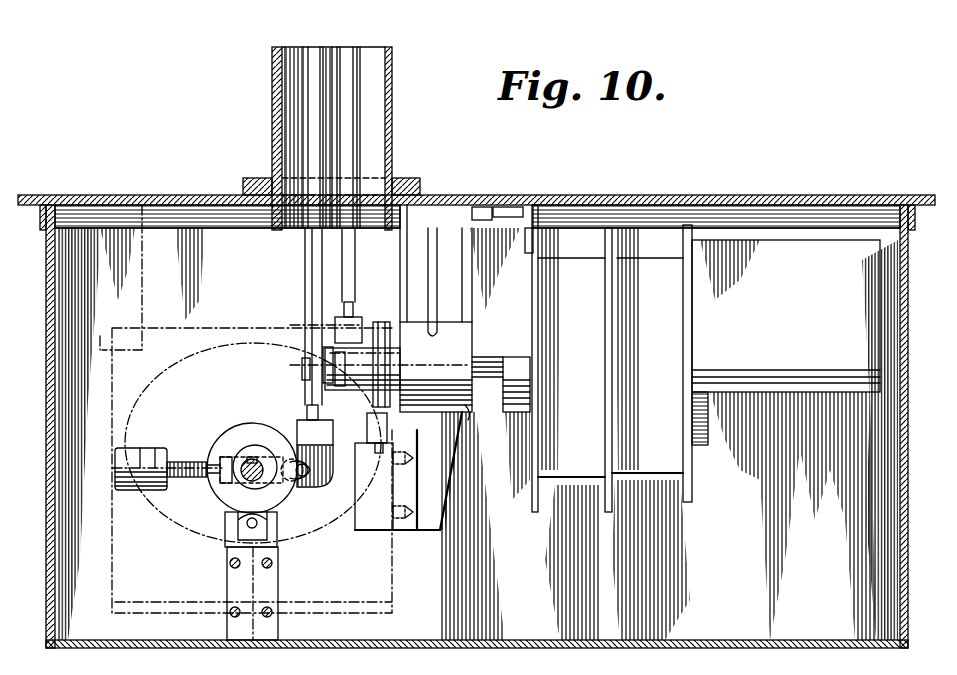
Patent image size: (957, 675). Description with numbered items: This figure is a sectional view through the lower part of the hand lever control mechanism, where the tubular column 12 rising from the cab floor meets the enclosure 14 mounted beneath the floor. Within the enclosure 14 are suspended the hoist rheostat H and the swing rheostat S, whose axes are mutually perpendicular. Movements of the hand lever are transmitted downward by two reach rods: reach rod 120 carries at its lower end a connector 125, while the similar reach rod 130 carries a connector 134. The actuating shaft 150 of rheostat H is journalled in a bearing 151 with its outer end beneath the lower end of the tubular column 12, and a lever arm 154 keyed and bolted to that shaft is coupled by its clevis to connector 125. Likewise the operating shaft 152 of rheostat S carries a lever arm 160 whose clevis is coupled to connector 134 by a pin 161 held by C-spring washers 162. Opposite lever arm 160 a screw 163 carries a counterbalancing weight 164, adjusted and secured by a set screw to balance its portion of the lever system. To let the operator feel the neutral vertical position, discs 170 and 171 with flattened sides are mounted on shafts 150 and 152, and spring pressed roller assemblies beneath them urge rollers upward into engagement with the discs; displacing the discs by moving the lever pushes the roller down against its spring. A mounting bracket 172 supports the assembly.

The tubular column 12 is at (394, 74).
The enclosure 14 is at (907, 322).
The reach rod 120 is at (360, 58).
The reach rod 130 is at (322, 62).
The connector 125 is at (333, 320).
The actuating shaft 150 is at (483, 355).
The bearing 151 is at (468, 408).
The lever arm 154 is at (340, 388).
The disc 170 is at (376, 321).
The disc 171 is at (260, 432).
The operating shaft 152 is at (243, 465).
The screw 163 is at (187, 462).
The counter balancing weight 164 is at (127, 448).
The pin 161 is at (320, 455).
The C-spring washers 162 is at (300, 481).
The lever arm 160 is at (300, 485).
The connector 134 is at (312, 482).
The mounting bracket 172 is at (220, 574).
The swing rheostat S is at (403, 553).
The hoist rheostat H is at (571, 485).